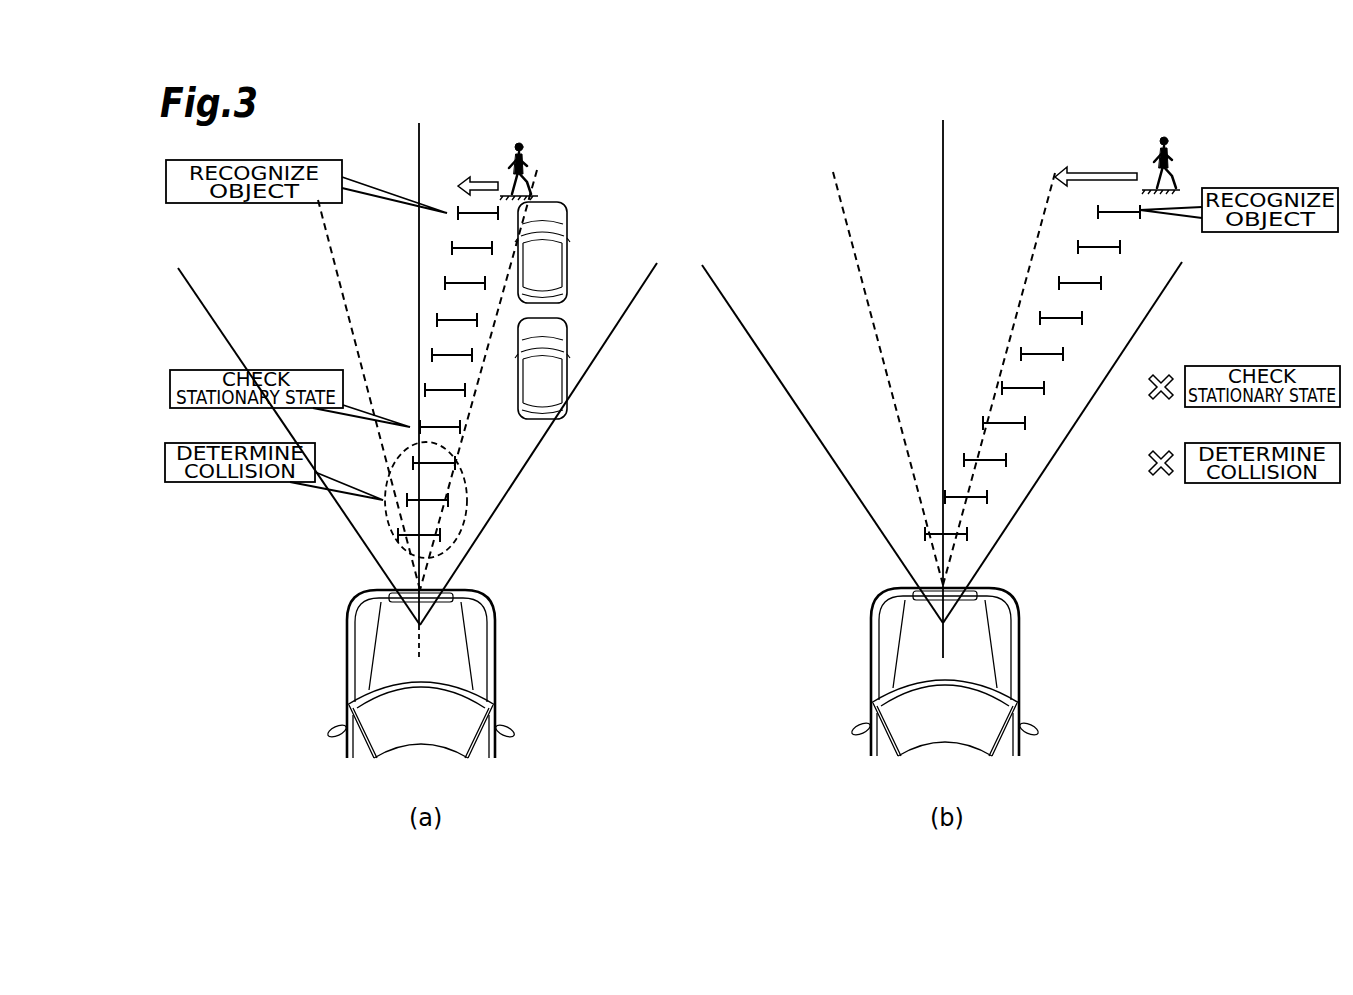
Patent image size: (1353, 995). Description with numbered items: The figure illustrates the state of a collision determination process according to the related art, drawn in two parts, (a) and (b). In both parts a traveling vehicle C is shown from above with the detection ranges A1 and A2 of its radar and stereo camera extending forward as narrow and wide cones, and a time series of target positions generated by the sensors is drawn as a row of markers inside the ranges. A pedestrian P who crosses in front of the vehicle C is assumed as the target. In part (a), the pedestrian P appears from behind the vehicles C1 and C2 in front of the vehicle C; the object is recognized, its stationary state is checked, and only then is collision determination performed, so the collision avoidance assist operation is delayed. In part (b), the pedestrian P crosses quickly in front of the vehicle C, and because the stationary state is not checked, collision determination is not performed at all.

The pedestrian P is at (532, 160).
The vehicle in front C1 is at (568, 219).
The vehicle in front C2 is at (563, 320).
The vehicle C is at (497, 649).
The detection range A1 is at (333, 260).
The detection range A2 is at (215, 323).